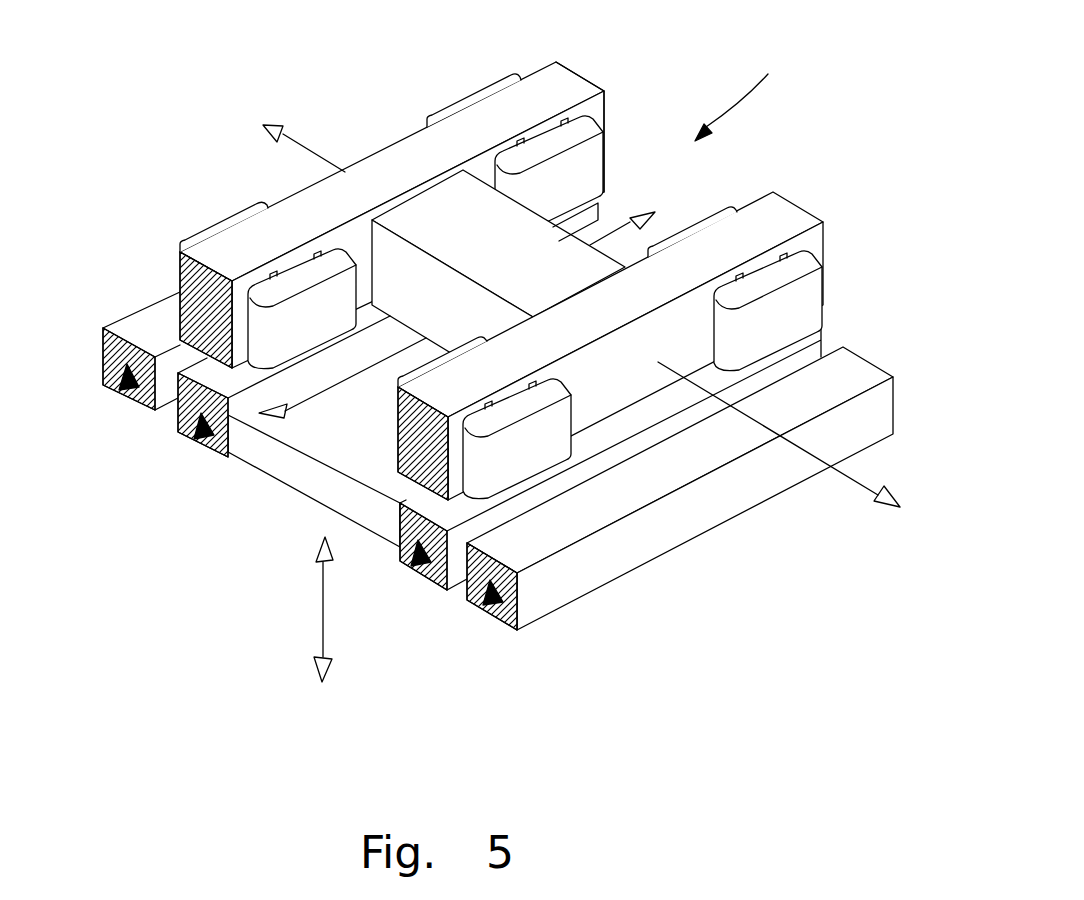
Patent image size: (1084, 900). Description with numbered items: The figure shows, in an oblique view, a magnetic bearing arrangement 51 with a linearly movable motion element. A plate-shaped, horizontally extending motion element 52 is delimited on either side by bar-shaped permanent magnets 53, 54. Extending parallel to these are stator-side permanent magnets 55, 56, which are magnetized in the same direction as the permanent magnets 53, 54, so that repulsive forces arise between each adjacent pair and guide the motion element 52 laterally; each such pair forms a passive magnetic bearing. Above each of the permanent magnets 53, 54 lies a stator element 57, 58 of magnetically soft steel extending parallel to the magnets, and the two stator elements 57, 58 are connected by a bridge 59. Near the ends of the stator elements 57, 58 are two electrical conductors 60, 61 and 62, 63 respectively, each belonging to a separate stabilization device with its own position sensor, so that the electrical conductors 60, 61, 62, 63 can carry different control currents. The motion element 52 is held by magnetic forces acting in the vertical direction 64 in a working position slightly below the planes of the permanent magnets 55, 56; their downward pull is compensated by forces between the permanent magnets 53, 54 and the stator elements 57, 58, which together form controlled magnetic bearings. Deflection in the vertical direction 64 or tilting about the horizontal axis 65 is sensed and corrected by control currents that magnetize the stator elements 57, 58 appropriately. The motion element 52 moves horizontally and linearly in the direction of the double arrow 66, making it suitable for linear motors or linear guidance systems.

The magnetic bearing arrangement 51 is at (743, 90).
The motion element 52 is at (280, 470).
The permanent magnet 53 is at (190, 430).
The permanent magnet 54 is at (423, 582).
The stator-side permanent magnet 55 is at (128, 398).
The stator-side permanent magnet 56 is at (572, 587).
The stator element 57 is at (570, 88).
The stator element 58 is at (787, 220).
The bridge 59 is at (428, 208).
The electrical conductor 60 is at (233, 226).
The electrical conductor 61 is at (467, 98).
The electrical conductor 62 is at (553, 453).
The electrical conductor 63 is at (810, 308).
The vertical direction 64 is at (322, 613).
The horizontal axis 65 is at (860, 475).
The double arrow 66 is at (607, 235).